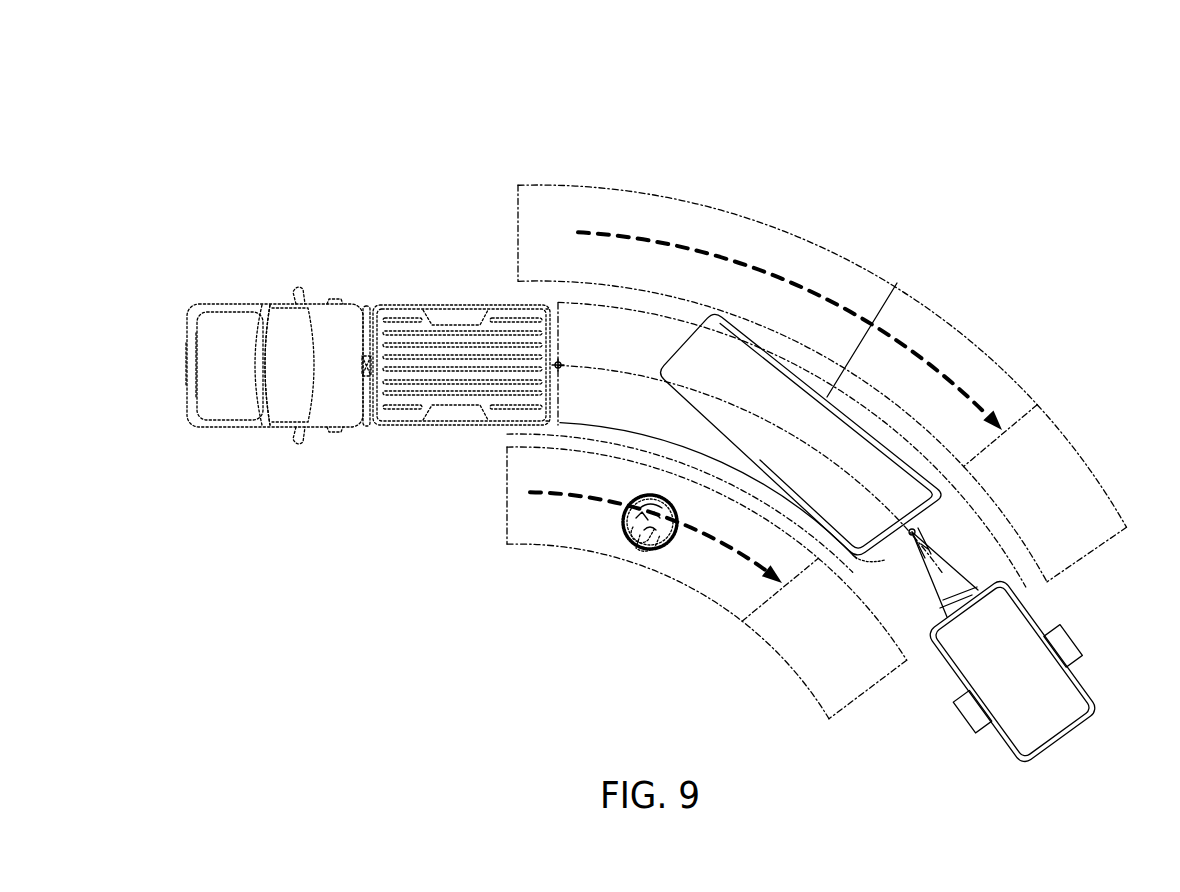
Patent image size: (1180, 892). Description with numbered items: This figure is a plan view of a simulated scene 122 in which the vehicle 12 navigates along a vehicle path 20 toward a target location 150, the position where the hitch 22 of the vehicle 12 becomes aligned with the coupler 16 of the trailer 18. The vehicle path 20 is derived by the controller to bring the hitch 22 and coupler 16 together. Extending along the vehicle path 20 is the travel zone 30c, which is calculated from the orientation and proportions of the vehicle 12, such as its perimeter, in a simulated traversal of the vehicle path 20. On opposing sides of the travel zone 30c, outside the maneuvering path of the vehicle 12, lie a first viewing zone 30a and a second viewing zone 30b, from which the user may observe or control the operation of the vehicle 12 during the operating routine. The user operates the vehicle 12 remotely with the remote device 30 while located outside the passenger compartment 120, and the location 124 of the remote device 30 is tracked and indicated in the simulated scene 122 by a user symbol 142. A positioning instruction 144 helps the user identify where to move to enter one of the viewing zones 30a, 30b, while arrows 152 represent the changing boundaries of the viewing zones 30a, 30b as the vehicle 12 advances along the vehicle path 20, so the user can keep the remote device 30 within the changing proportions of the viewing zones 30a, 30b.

The vehicle 12 is at (290, 262).
The passenger compartment 120 is at (285, 392).
The simulated scene 122 is at (362, 112).
The hitch 22 is at (560, 362).
The remote device 30 is at (645, 495).
The first viewing zone 30a is at (756, 640).
The second viewing zone 30b is at (983, 347).
The travel zone 30c is at (635, 306).
The vehicle path 20 is at (880, 497).
The target location 150 is at (897, 283).
The positioning instruction 144 is at (765, 270).
The arrows 152 is at (535, 500).
The location of the remote device 124 is at (672, 547).
The user symbol 142 is at (645, 542).
The coupler 16 is at (914, 545).
The trailer 18 is at (1087, 618).